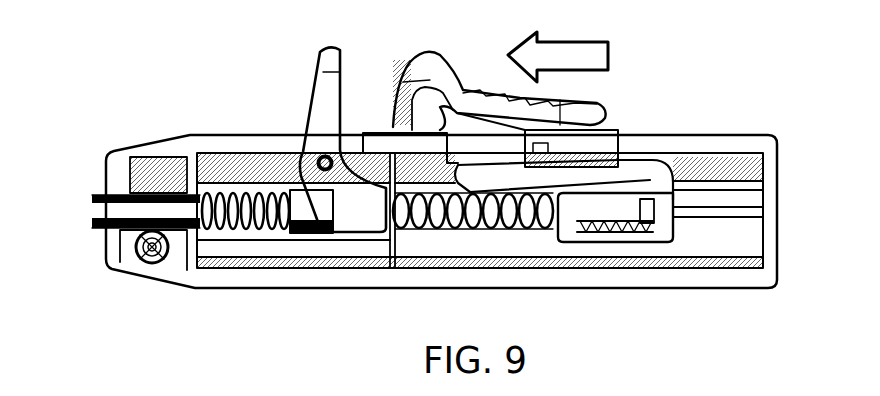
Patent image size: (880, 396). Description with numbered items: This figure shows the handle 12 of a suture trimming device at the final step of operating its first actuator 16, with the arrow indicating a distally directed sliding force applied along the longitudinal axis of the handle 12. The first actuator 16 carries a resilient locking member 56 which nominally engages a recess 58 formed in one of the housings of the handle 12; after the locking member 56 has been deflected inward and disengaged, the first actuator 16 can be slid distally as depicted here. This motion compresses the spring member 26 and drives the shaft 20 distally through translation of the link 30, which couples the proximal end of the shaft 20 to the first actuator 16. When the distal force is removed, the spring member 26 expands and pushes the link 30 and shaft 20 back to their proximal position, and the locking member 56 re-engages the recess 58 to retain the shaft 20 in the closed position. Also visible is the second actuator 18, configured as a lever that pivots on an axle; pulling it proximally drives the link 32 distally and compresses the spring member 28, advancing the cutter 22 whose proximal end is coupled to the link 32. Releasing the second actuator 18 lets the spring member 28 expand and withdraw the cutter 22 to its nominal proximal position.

The handle 12 is at (707, 133).
The first actuator 16 is at (430, 55).
The second actuator 18 is at (342, 53).
The shaft 20 is at (513, 227).
The cutter 22 is at (97, 227).
The spring member 26 is at (458, 232).
The spring member 28 is at (220, 230).
The link 30 is at (640, 240).
The link 32 is at (300, 243).
The locking member 56 is at (622, 152).
The recess 58 is at (525, 148).